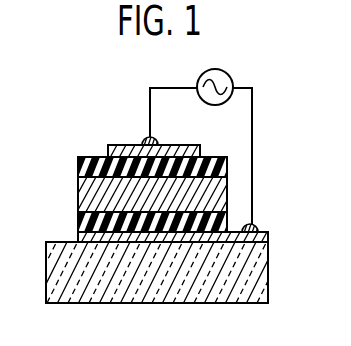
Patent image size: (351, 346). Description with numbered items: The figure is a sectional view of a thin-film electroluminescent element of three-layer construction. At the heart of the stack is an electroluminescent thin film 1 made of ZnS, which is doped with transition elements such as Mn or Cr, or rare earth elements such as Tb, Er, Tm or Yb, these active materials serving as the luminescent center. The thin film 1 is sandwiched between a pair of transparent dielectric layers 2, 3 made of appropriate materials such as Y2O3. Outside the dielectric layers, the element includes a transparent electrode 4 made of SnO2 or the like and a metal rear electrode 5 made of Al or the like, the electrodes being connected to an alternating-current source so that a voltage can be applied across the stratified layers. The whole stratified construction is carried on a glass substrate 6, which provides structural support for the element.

The electroluminescent thin film 1 is at (228, 194).
The transparent dielectric layer 2 is at (228, 222).
The transparent dielectric layer 3 is at (228, 163).
The transparent electrode 4 is at (78, 241).
The metal rear electrode 5 is at (122, 144).
The glass substrate 6 is at (269, 282).